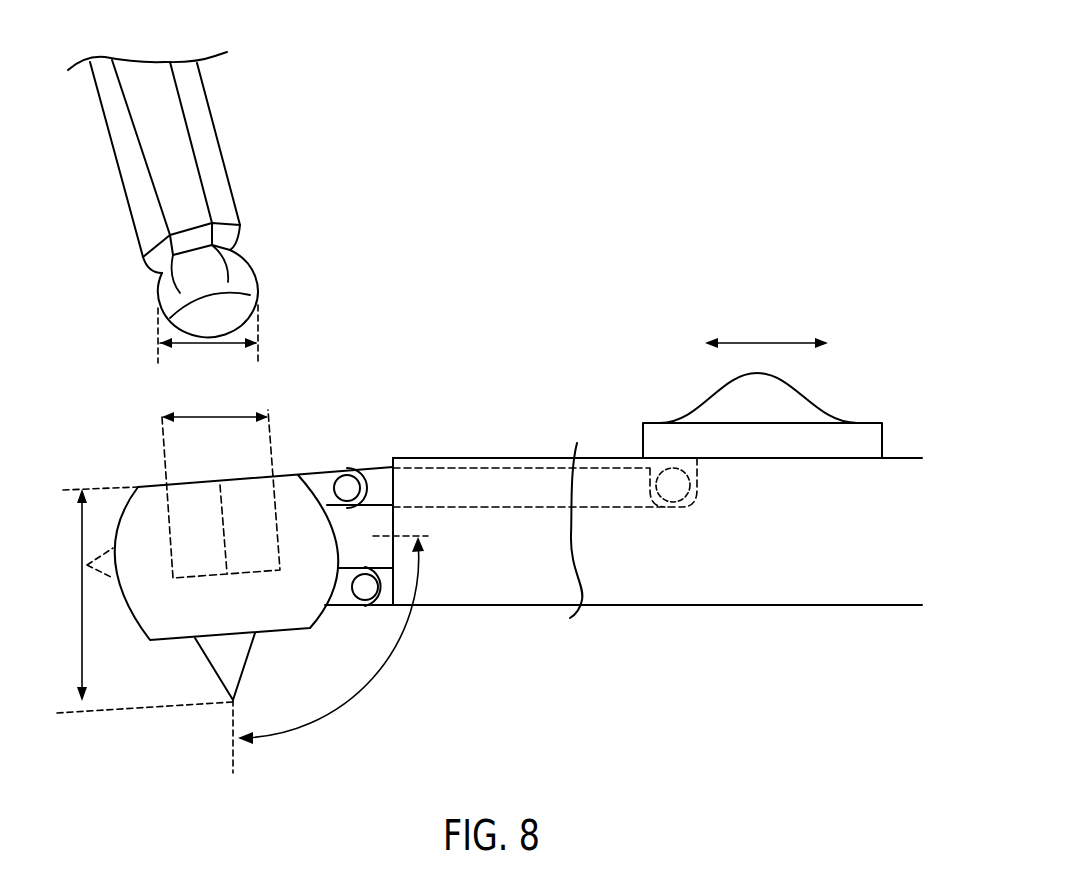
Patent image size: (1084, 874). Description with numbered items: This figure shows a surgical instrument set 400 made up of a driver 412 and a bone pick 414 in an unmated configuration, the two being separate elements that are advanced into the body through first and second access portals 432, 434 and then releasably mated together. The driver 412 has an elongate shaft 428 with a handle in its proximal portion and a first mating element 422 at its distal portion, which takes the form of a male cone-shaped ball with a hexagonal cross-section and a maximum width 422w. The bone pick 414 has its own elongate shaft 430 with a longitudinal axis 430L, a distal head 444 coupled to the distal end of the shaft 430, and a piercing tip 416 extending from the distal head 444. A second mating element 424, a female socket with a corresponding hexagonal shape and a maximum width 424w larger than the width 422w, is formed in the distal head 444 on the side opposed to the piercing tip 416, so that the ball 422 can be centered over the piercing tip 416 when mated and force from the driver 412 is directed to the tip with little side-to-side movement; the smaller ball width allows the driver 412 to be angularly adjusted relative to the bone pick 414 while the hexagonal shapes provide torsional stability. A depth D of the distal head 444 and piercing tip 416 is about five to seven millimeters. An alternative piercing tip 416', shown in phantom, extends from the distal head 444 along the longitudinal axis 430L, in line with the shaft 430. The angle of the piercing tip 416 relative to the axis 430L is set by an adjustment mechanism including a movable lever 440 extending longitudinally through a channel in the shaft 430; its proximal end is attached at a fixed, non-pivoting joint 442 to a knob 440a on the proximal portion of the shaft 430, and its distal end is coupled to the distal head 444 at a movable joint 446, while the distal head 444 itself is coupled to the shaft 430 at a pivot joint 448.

The surgical instrument set 400 is at (565, 216).
The driver 412 is at (236, 131).
The first access portal 432 is at (226, 64).
The elongate shaft 428 is at (235, 193).
The first mating element 422 is at (255, 277).
The maximum width 422w is at (188, 345).
The bone pick 414 is at (467, 375).
The distal head 444 is at (290, 631).
The second mating element 424 is at (256, 488).
The maximum width 424w is at (205, 418).
The piercing tip 416' is at (102, 592).
The piercing tip 416 is at (203, 703).
The depth D is at (83, 677).
The movable joint 446 is at (350, 483).
The pivot joint 448 is at (365, 593).
The longitudinal axis 430L is at (420, 536).
The elongate shaft 430 is at (725, 607).
The lever 440 is at (487, 477).
The knob 440a is at (802, 390).
The fixed joint 442 is at (683, 487).
The second access portal 434 is at (589, 441).